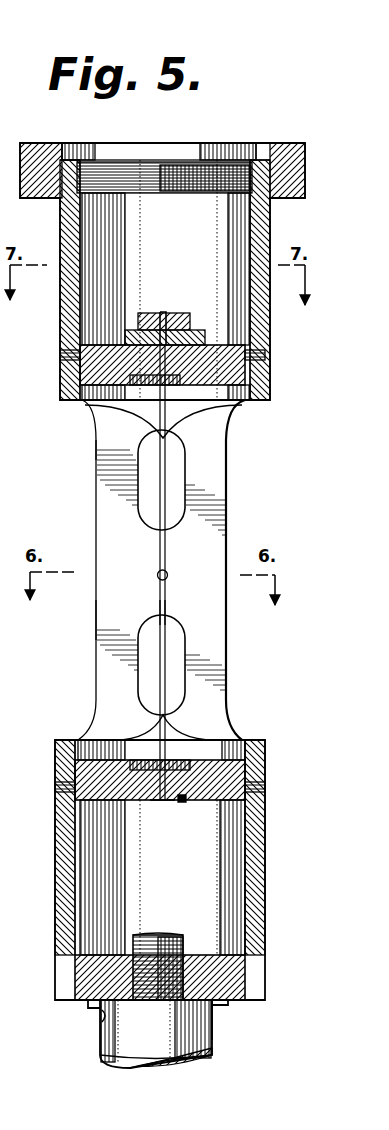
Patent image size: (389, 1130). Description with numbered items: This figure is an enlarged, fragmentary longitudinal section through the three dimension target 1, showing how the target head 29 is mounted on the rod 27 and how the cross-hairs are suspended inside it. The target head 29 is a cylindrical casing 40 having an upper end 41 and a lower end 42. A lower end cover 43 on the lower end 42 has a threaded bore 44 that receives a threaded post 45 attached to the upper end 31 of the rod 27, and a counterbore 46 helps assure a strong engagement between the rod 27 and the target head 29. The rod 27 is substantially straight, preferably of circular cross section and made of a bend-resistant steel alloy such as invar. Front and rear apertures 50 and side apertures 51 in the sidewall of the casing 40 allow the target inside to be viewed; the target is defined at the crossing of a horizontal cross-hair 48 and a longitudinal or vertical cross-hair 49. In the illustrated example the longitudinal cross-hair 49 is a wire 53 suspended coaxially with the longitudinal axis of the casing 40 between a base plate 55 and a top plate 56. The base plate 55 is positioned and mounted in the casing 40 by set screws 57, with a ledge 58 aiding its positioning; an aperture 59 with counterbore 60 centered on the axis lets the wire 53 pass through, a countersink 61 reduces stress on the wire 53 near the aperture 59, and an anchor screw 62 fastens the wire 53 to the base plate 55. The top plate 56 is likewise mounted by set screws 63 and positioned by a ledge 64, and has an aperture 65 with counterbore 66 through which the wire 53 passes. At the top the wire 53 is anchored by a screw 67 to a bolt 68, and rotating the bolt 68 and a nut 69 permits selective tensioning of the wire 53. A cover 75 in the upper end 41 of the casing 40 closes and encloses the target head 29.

The three dimension target 1 is at (253, 494).
The rod 27 is at (212, 1053).
The target head 29 is at (80, 655).
The upper end 31 is at (213, 1020).
The cylindrical casing 40 is at (60, 318).
The upper end 41 is at (60, 209).
The lower end 42 is at (55, 963).
The lower end cover 43 is at (55, 997).
The threaded bore 44 is at (185, 945).
The threaded post 45 is at (148, 935).
The counterbore 46 is at (104, 1018).
The horizontal cross-hair 48 is at (167, 572).
The longitudinal cross-hair 49 is at (166, 612).
The front and rear apertures 50 is at (95, 423).
The side apertures 51 is at (182, 455).
The wire 53 is at (160, 546).
The base plate 55 is at (228, 765).
The top plate 56 is at (250, 378).
The set screws 57 is at (252, 783).
The ledge 58 is at (75, 790).
The aperture 59 is at (133, 770).
The counterbore 60 is at (180, 766).
The countersink 61 is at (165, 800).
The anchor screw 62 is at (182, 805).
The set screws 63 is at (265, 350).
The ledge 64 is at (60, 350).
The aperture 65 is at (168, 360).
The counterbore 66 is at (150, 374).
The screw 67 is at (178, 312).
The bolt 68 is at (148, 313).
The nut 69 is at (199, 330).
The cover 75 is at (137, 148).